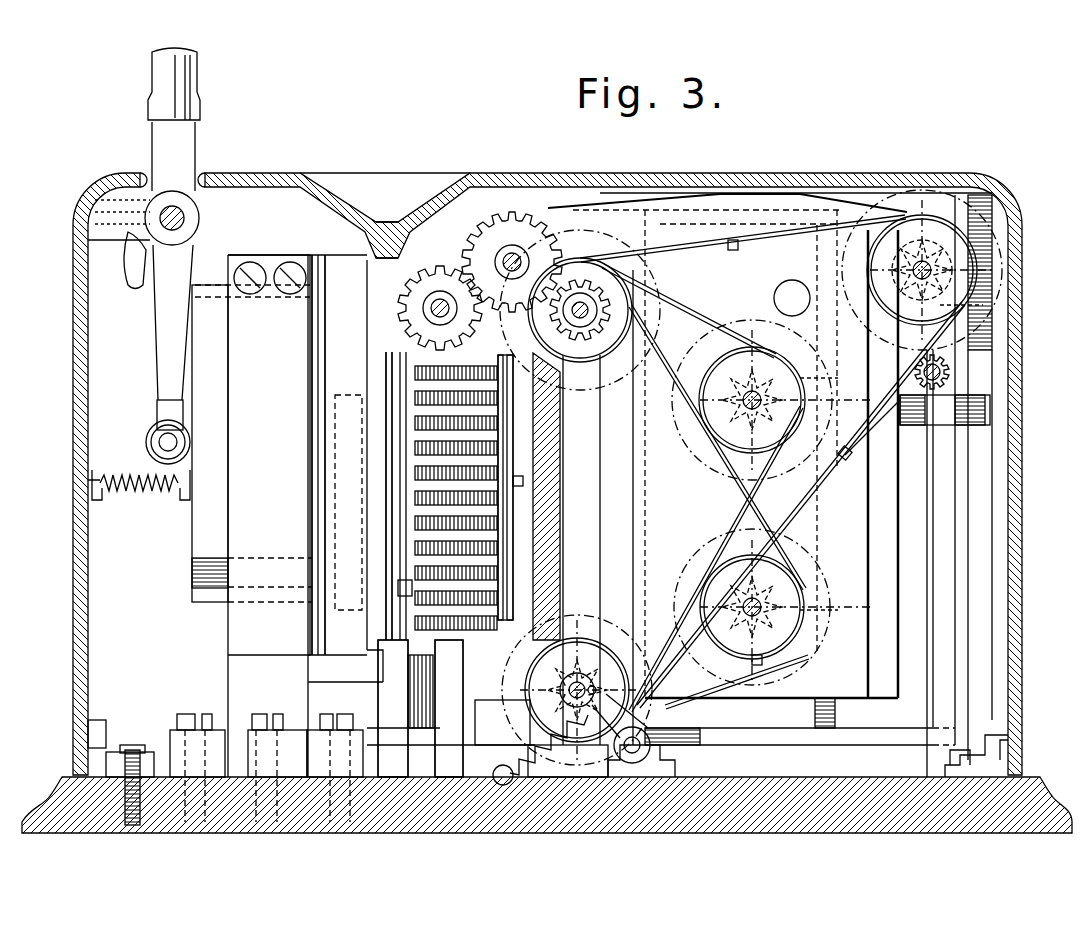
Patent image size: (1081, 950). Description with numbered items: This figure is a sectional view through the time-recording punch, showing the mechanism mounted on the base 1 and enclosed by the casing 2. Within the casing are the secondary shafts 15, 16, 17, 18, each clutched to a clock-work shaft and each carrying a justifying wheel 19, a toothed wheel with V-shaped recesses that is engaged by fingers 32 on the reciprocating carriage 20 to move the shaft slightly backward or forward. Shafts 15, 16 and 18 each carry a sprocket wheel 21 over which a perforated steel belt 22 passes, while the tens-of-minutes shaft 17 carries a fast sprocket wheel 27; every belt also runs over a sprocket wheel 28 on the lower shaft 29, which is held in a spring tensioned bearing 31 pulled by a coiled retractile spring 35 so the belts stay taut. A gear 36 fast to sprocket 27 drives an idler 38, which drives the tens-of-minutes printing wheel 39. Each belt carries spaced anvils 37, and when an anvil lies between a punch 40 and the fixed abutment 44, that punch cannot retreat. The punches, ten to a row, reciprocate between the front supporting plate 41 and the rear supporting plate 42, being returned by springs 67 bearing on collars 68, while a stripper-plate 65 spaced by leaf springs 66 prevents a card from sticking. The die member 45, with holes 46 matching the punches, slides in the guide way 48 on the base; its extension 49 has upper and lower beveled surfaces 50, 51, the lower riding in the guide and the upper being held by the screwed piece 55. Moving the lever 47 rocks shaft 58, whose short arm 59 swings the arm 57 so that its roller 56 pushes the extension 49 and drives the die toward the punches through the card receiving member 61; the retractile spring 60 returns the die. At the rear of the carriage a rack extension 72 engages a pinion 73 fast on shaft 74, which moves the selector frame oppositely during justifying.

The base 1 is at (765, 810).
The casing 2 is at (72, 548).
The secondary shaft 15 is at (930, 270).
The secondary shaft 16 is at (758, 398).
The secondary shaft 17 is at (617, 292).
The secondary shaft 18 is at (765, 630).
The justifying wheel 19 is at (908, 455).
The reciprocating carriage 20 is at (395, 730).
The sprocket wheel 21 is at (745, 360).
The perforated steel belt 22 is at (765, 232).
The sprocket wheel 27 is at (625, 298).
The sprocket wheel 28 is at (570, 650).
The shaft 29 is at (585, 685).
The spring tensioned bearing 31 is at (648, 733).
The finger 32 is at (503, 693).
The coiled retractile spring 35 is at (522, 720).
The gear 36 is at (594, 341).
The anvil 37 is at (733, 250).
The idler 38 is at (512, 228).
The tens-of-minutes printing wheel 39 is at (432, 265).
The punch 40 is at (420, 512).
The front supporting plate 41 is at (410, 645).
The rear supporting plate 42 is at (500, 416).
The fixed abutment 44 is at (552, 530).
The die member 45 is at (340, 293).
The hole 46 is at (365, 420).
The lever 47 is at (188, 78).
The guide way 48 is at (265, 572).
The extension 49 is at (215, 513).
The upper beveled surface 50 is at (210, 305).
The lower beveled surface 51 is at (200, 578).
The piece 55 is at (272, 268).
The roller 56 is at (150, 440).
The arm 57 is at (172, 332).
The shaft 58 is at (168, 210).
The short arm 59 is at (130, 262).
The retractile spring 60 is at (130, 495).
The member 61 is at (368, 235).
The stripper-plate 65 is at (375, 660).
The leaf spring 66 is at (395, 395).
The spring 67 is at (455, 650).
The collar 68 is at (405, 588).
The rack extension 72 is at (975, 415).
The pinion 73 is at (890, 405).
The shaft 74 is at (955, 373).